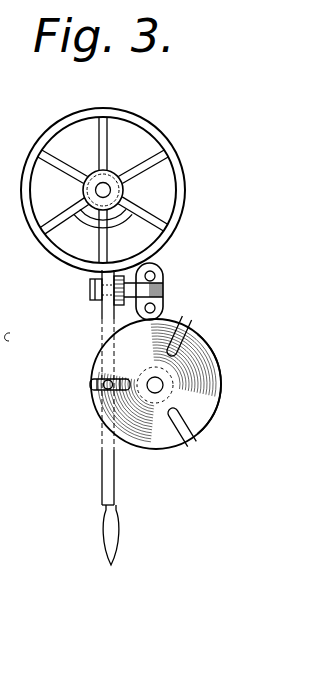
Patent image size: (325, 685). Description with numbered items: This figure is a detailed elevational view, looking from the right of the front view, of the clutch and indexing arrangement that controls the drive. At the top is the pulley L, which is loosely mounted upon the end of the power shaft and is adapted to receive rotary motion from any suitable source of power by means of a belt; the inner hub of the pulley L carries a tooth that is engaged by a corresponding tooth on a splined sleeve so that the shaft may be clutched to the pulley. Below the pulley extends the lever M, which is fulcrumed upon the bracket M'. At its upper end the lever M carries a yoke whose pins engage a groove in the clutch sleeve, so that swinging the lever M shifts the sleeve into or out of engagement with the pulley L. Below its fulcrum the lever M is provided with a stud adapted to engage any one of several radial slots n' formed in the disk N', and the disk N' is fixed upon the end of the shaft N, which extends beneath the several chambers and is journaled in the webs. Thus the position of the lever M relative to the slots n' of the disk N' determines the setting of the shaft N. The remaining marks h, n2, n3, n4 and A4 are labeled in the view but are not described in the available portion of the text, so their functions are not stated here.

The hand wheel h is at (178, 164).
The pulley L is at (104, 190).
The lever M is at (80, 417).
The bracket M' is at (154, 291).
The shaft N is at (168, 384).
The disk N' is at (215, 395).
The radial slots n' is at (198, 330).
The lower slot in disc n2 is at (192, 447).
The stud on disc n3 is at (92, 386).
The stud pin hole n4 is at (106, 388).
The frame part A4 is at (14, 651).